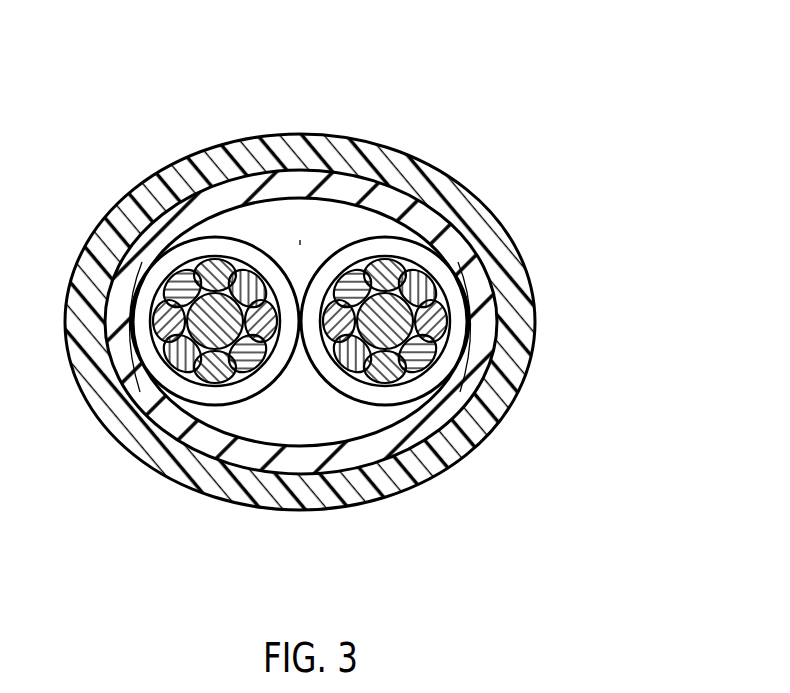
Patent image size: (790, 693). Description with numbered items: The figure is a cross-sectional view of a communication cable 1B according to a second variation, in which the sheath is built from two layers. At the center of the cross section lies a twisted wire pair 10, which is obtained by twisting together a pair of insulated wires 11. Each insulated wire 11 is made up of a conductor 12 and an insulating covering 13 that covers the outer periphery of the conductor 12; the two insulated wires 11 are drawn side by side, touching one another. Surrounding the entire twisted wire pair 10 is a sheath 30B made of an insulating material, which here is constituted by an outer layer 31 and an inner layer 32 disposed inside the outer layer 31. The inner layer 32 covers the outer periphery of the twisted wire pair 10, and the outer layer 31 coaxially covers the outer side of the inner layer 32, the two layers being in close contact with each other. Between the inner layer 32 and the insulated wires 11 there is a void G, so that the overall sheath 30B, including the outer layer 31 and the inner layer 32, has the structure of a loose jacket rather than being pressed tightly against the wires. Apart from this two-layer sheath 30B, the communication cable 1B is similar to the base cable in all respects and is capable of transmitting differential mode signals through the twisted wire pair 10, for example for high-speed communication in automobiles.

The communication cable 1B is at (376, 278).
The twisted wire pair 10 is at (302, 302).
The insulated wire 11 is at (187, 237).
The conductor 12 is at (193, 400).
The insulating covering 13 is at (125, 395).
The sheath 30B is at (377, 322).
The outer layer 31 is at (520, 332).
The inner layer 32 is at (467, 377).
The void G is at (262, 228).